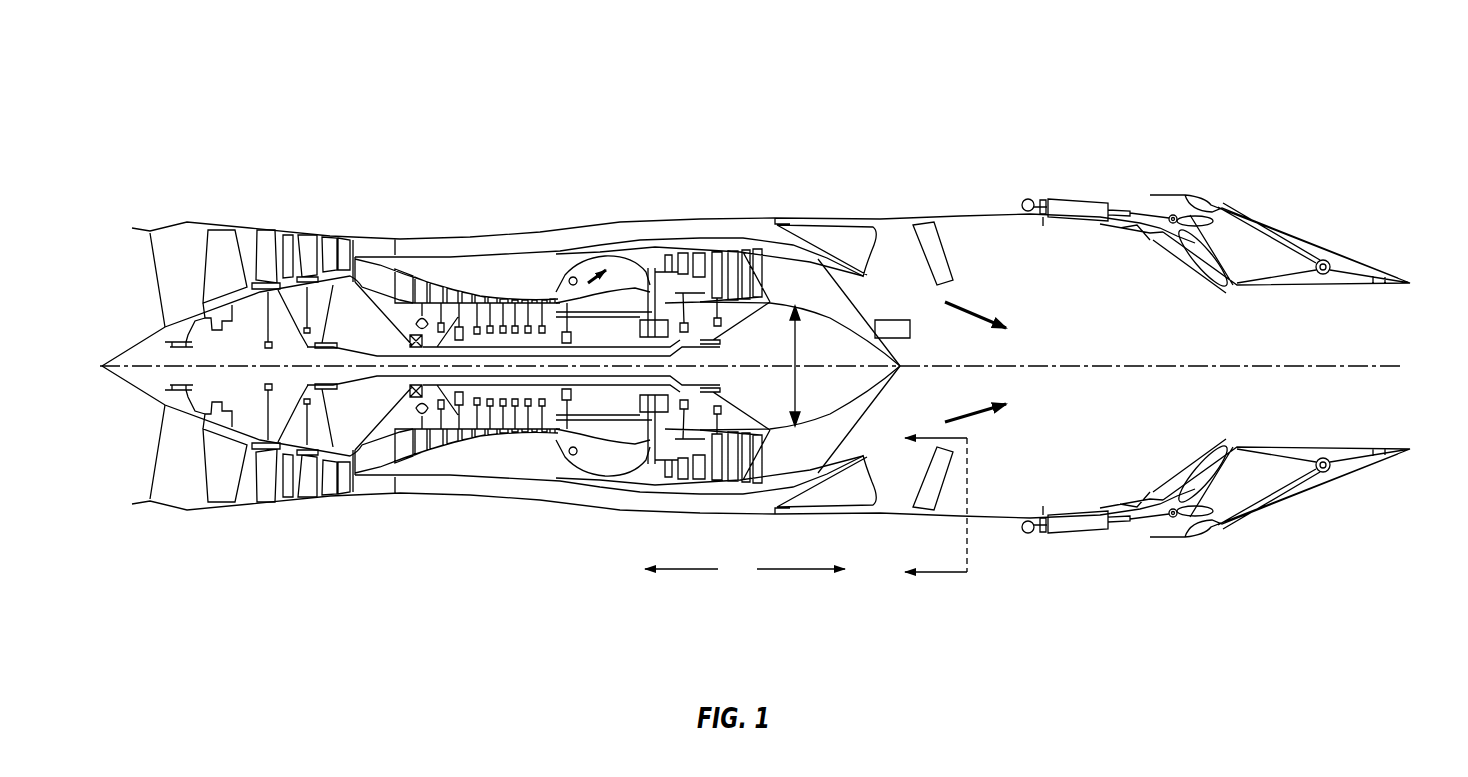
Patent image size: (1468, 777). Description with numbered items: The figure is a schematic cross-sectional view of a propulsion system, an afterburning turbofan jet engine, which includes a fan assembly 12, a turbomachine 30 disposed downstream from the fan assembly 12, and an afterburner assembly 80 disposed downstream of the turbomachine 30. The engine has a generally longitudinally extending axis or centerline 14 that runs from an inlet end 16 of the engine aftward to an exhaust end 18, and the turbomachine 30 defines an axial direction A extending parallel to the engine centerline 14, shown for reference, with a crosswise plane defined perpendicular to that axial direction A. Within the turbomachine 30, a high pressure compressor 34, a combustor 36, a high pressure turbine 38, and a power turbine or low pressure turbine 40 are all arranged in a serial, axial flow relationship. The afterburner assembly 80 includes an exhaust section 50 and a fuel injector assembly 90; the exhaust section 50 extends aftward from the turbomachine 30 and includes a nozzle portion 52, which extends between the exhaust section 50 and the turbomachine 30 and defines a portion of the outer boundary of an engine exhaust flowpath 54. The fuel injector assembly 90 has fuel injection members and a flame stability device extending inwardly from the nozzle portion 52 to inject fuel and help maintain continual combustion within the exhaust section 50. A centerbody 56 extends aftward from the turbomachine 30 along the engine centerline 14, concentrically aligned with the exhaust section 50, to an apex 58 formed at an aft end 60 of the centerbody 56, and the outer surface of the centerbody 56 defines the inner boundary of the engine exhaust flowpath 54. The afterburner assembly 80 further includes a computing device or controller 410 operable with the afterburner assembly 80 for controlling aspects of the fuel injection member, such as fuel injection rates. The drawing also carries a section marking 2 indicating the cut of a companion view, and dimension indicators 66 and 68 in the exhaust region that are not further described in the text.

The section line 2- 2 is at (947, 504).
The fan assembly 12 is at (246, 226).
The centerline 14 is at (148, 362).
The inlet end 16 is at (138, 248).
The exhaust end 18 is at (1408, 305).
The turbomachine 30 is at (499, 536).
The high pressure compressor 34 is at (452, 278).
The combustor 36 is at (591, 274).
The high pressure turbine 38 is at (652, 252).
The low pressure turbine 40 is at (693, 250).
The exhaust section 50 is at (1115, 152).
The nozzle portion 52 is at (1234, 286).
The engine exhaust flowpath 54 is at (1022, 403).
The centerbody 56 is at (887, 386).
The apex 58 is at (905, 364).
The aft end 60 is at (820, 313).
The fan nozzle exit dimension 66 is at (793, 352).
The core cowl 68 is at (836, 414).
The afterburner assembly 80 is at (903, 54).
The fuel injector assembly 90 is at (953, 268).
The controller 410 is at (892, 320).
The axial direction A is at (745, 569).